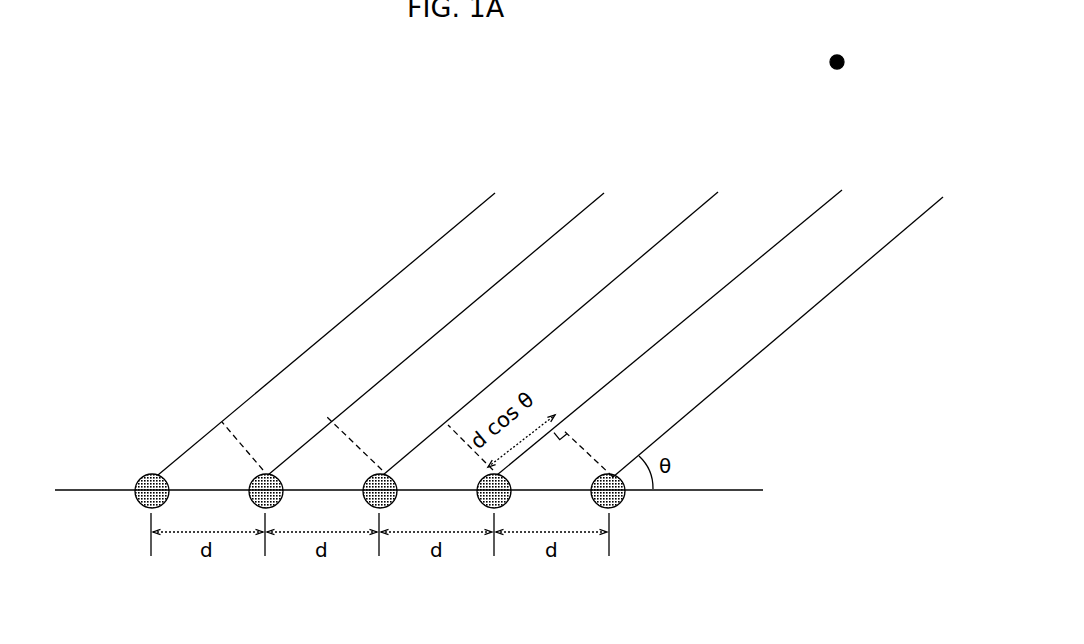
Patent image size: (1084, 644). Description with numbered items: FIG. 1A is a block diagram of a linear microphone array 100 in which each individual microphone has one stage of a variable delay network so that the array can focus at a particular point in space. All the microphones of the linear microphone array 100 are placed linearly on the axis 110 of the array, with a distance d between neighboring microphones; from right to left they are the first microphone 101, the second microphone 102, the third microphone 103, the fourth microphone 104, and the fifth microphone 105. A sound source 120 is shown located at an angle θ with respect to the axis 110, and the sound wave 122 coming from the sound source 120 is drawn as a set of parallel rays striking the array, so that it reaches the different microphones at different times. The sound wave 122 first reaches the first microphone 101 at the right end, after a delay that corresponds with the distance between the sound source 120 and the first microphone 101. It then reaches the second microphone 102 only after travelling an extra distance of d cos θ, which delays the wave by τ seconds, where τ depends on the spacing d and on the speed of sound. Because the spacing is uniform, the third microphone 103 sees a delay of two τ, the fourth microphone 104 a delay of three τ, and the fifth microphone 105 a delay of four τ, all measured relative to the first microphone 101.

The linear microphone array 100 is at (390, 521).
The first microphone 101 is at (625, 520).
The second microphone 102 is at (510, 508).
The third microphone 103 is at (360, 515).
The fourth microphone 104 is at (253, 510).
The fifth microphone 105 is at (142, 510).
The axis 110 is at (738, 482).
The sound source 120 is at (864, 71).
The sound wave 122 is at (710, 183).